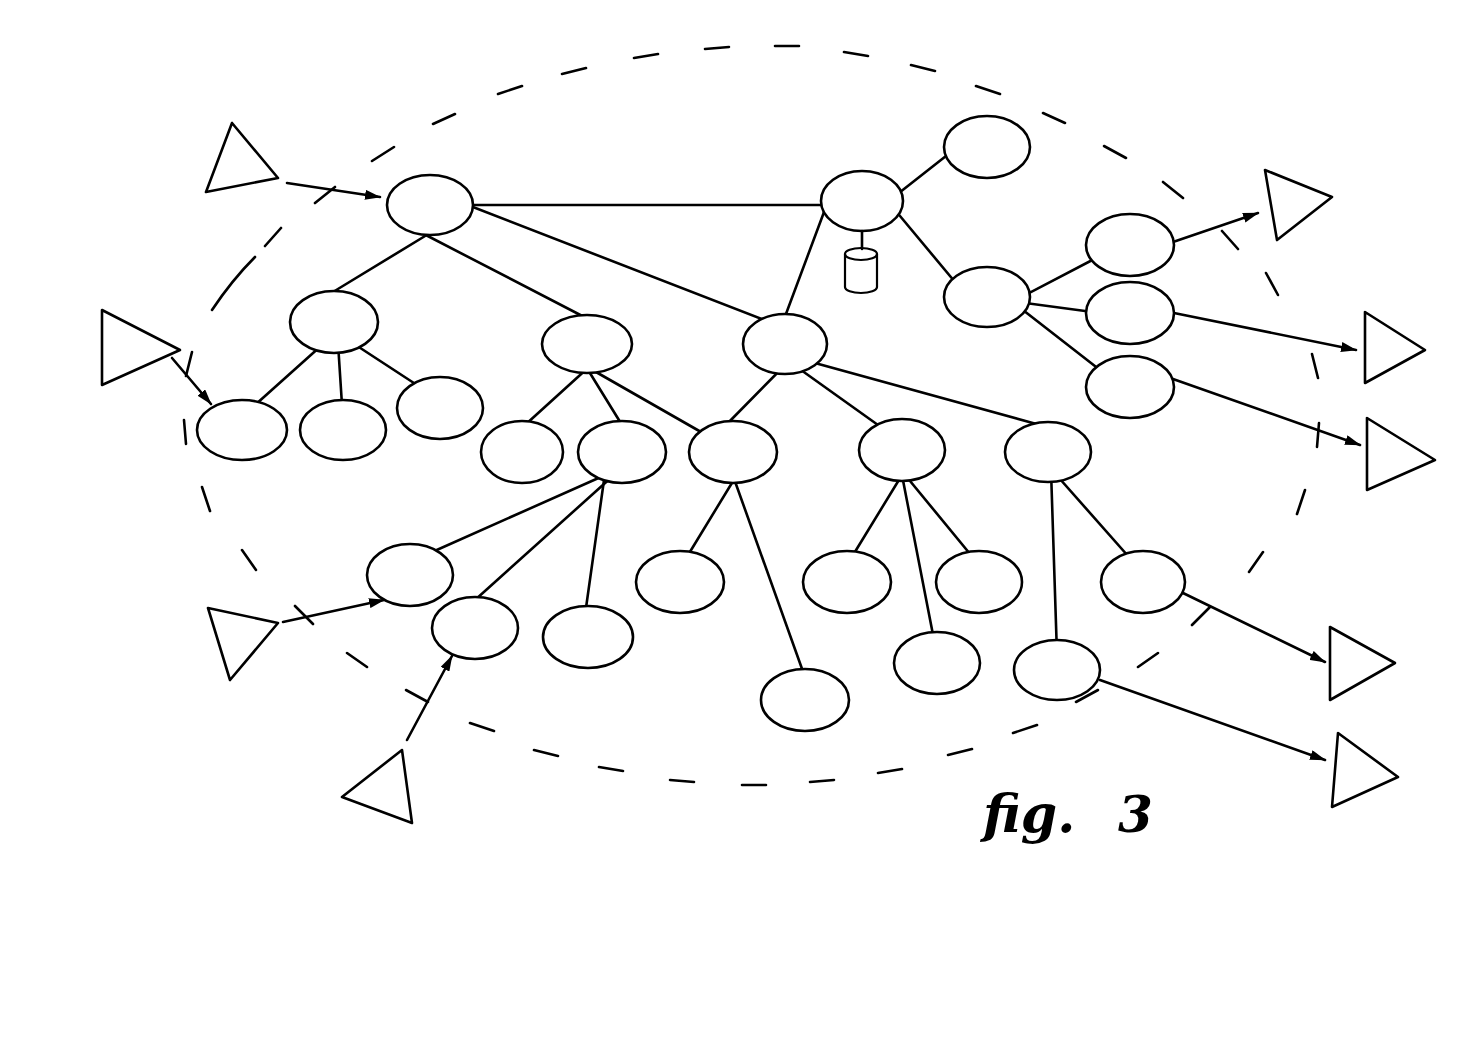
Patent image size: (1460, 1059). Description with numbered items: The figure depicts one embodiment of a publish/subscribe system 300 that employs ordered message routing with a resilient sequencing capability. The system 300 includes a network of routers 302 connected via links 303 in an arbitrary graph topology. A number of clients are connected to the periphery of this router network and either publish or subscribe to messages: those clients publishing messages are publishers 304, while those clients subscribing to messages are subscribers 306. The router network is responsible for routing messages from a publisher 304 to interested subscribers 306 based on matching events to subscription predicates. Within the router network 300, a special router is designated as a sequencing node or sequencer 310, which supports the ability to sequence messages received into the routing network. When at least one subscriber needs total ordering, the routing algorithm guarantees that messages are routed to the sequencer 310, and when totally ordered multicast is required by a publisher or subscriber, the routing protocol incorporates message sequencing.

The publish/subscribe system 300 is at (1028, 78).
The router 302 is at (310, 335).
The link 303 is at (377, 267).
The publisher 304 is at (205, 186).
The subscriber 306 is at (1300, 178).
The sequencer 310 is at (835, 214).